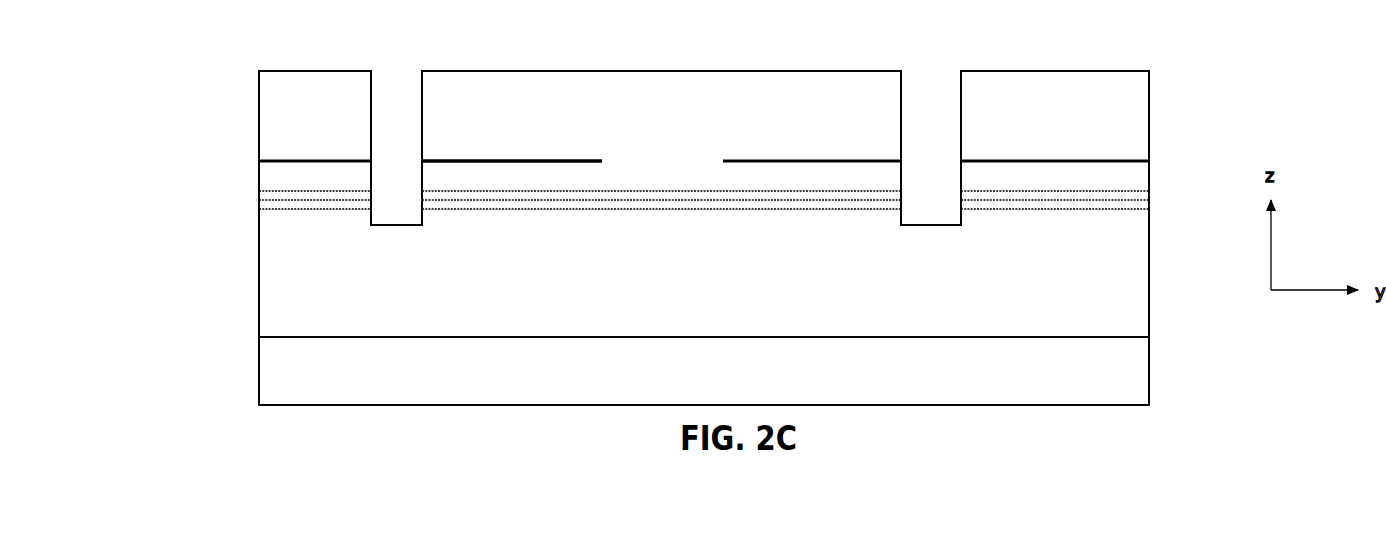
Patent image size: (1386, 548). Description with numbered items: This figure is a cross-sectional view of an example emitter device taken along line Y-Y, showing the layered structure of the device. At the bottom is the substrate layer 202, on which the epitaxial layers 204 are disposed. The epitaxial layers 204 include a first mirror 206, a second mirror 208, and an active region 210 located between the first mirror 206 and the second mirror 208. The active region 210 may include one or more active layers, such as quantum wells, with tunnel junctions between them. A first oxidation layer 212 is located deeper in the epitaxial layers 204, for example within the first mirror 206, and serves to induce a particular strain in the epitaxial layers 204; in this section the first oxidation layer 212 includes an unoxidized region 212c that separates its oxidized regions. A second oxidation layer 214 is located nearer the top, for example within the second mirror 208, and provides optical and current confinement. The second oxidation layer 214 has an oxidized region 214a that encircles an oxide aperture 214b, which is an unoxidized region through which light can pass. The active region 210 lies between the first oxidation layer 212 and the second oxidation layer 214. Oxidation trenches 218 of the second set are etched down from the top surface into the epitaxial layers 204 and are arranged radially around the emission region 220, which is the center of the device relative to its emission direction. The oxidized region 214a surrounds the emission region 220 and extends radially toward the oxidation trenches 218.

The substrate layer 202 is at (718, 381).
The epitaxial layers 204 is at (1157, 72).
The first mirror 206 is at (272, 305).
The second mirror 208 is at (270, 99).
The active region 210 is at (260, 200).
The first oxidation layer 212 is at (260, 244).
The unoxidized region 212c is at (463, 243).
The second oxidation layer 214 is at (262, 161).
The oxidized region 214a is at (498, 160).
The oxide aperture 214b is at (664, 157).
The second set of oxidation trenches 218 is at (395, 101).
The emission region 220 is at (664, 66).